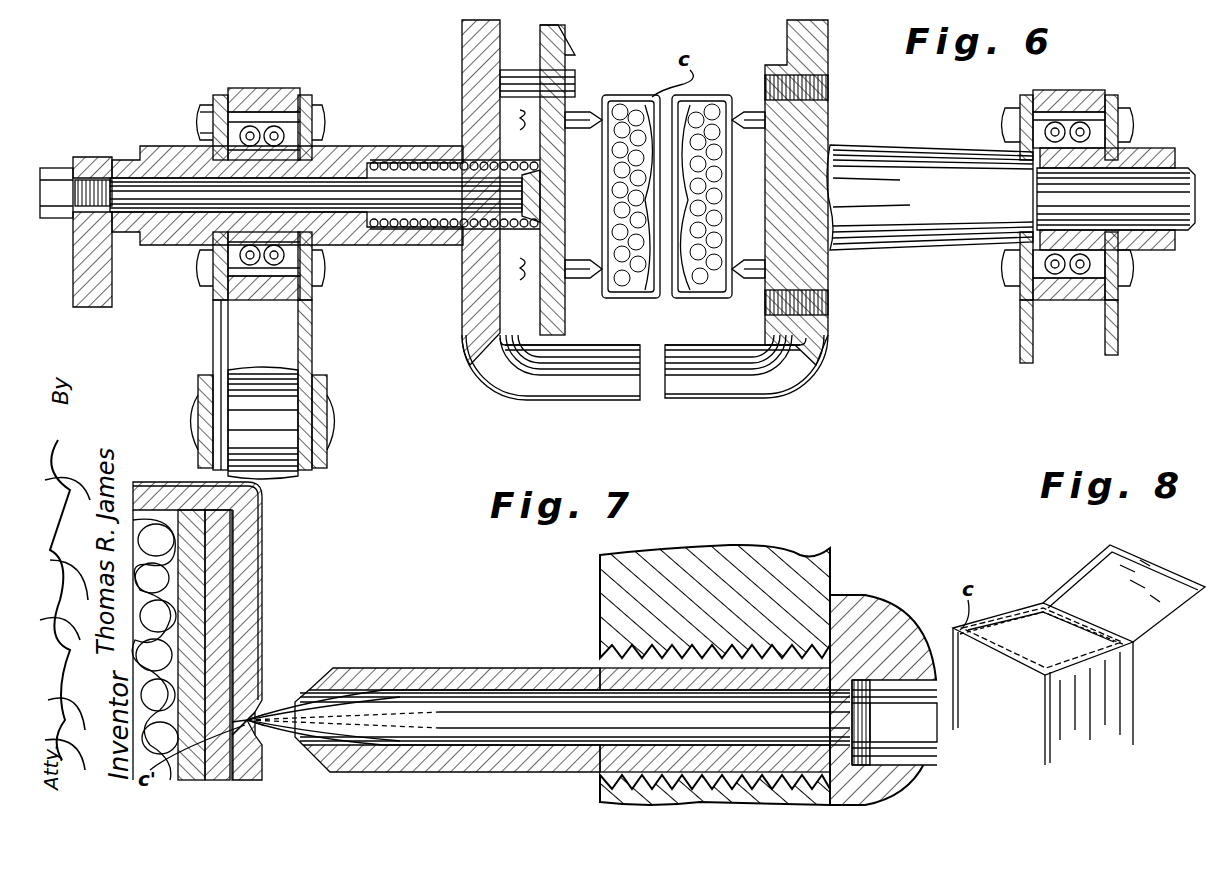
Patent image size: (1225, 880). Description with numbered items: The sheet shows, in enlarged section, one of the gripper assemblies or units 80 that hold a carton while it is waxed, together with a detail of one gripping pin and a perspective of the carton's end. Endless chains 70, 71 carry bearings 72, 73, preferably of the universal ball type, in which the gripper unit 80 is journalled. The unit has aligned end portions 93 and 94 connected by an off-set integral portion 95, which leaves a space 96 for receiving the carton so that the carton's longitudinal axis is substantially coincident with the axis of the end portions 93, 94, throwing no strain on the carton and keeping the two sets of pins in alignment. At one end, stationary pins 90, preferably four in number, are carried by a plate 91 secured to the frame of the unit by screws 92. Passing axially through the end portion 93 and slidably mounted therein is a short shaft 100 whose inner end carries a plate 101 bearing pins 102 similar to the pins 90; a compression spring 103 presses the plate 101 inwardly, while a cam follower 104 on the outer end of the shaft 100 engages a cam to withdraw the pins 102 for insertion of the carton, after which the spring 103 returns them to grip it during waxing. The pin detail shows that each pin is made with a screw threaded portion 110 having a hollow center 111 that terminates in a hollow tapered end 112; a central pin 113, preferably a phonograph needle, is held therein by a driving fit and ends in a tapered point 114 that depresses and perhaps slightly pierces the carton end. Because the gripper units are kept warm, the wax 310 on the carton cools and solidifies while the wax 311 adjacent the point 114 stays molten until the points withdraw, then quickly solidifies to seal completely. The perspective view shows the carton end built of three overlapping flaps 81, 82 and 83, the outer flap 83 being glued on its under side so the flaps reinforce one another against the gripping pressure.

In FIG. 6, the endless chain 70 is at (220, 350).
In FIG. 6, the endless chain 71 is at (1020, 326).
In FIG. 6, the bearing 72 is at (300, 112).
In FIG. 6, the bearing 73 is at (1112, 108).
In FIG. 6, the gripper assembly 80 is at (447, 305).
In FIG. 8, the end flap 81 is at (1040, 640).
In FIG. 7, the end flap 82 is at (214, 538).
In FIG. 8, the end flap 82 is at (1022, 626).
In FIG. 8, the end flap 83 is at (1135, 617).
In FIG. 6, the stationary pin 90 is at (748, 110).
In FIG. 7, the stationary pin 90 is at (386, 664).
In FIG. 6, the plate 91 is at (838, 212).
In FIG. 6, the screw 92 is at (830, 95).
In FIG. 6, the end portion 93 is at (388, 146).
In FIG. 6, the end portion 94 is at (918, 160).
In FIG. 6, the off-set integral portion 95 is at (578, 385).
In FIG. 6, the space 96 is at (592, 346).
In FIG. 6, the short shaft 100 is at (366, 202).
In FIG. 6, the plate 101 is at (560, 170).
In FIG. 6, the pin 102 is at (572, 110).
In FIG. 6, the compression spring 103 is at (430, 216).
In FIG. 6, the cam follower 104 is at (112, 298).
In FIG. 7, the screw threaded portion 110 is at (686, 670).
In FIG. 7, the hollow center 111 is at (428, 676).
In FIG. 7, the hollow tapered end 112 is at (332, 692).
In FIG. 7, the central pin 113 is at (522, 735).
In FIG. 7, the tapered point 114 is at (294, 745).
In FIG. 7, the wax 310 is at (262, 545).
In FIG. 7, the wax 311 is at (257, 714).